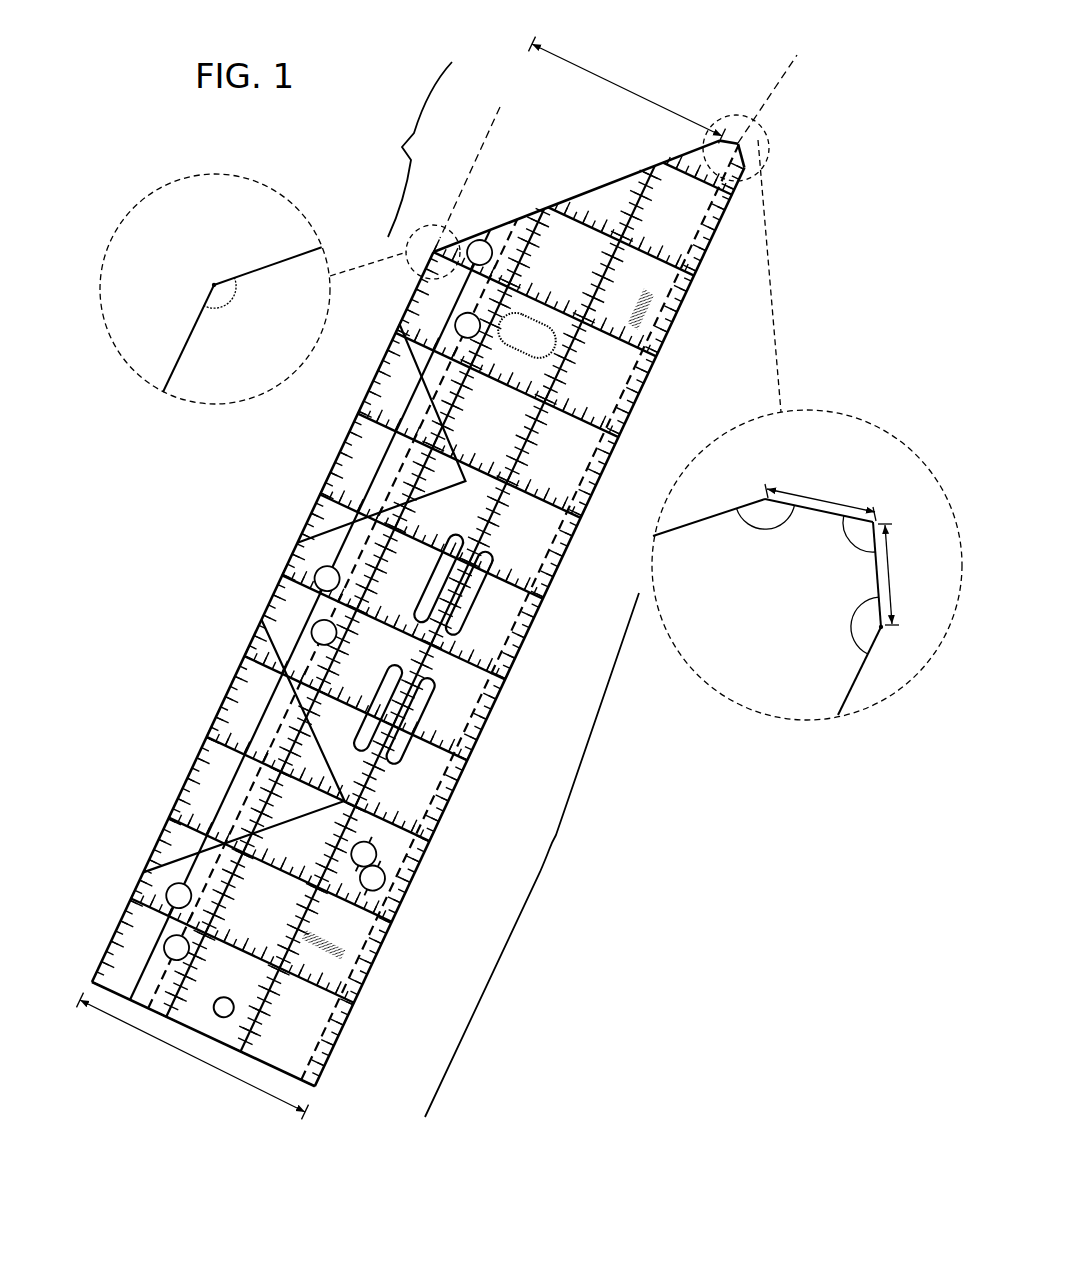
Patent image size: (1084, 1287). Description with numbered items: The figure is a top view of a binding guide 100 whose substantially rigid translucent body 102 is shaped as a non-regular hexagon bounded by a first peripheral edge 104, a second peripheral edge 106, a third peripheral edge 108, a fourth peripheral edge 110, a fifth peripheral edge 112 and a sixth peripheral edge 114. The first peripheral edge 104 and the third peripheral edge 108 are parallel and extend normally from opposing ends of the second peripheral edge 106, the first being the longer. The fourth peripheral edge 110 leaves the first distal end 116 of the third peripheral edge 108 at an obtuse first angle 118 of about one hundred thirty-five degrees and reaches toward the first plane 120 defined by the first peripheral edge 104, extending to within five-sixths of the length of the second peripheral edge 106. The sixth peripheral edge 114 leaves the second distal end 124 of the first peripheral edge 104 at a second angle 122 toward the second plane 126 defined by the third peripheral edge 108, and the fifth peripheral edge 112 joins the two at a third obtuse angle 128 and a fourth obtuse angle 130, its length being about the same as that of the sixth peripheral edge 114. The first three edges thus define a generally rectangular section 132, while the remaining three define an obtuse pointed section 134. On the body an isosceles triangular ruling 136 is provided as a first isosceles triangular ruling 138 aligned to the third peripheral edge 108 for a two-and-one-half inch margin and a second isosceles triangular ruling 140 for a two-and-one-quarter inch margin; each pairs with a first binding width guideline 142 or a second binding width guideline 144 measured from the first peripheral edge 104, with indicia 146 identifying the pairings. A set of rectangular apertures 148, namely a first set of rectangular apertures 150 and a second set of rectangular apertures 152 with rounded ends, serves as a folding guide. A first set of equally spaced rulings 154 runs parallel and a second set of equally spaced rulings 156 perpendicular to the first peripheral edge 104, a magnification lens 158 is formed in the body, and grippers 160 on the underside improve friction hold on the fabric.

The binding guide 100 is at (803, 127).
The translucent body 102 is at (691, 292).
The first peripheral edge 104 is at (353, 1012).
The second peripheral edge 106 is at (217, 1043).
The third peripheral edge 108 is at (134, 887).
The fourth peripheral edge 110 is at (685, 520).
The fifth peripheral edge 112 is at (733, 148).
The sixth peripheral edge 114 is at (746, 156).
The first distal end 116 is at (212, 283).
The first angle 118 is at (226, 306).
The first plane 120 is at (780, 87).
The second angle 122 is at (853, 618).
The second distal end 124 is at (882, 628).
The second plane 126 is at (479, 163).
The third obtuse angle 128 is at (856, 540).
The fourth obtuse angle 130 is at (756, 522).
The rectangular section 132 is at (532, 855).
The obtuse pointed section 134 is at (410, 149).
The isosceles triangular ruling 136 is at (312, 532).
The first isosceles triangular ruling 138 is at (271, 778).
The second isosceles triangular ruling 140 is at (406, 460).
The first binding width guideline 142 is at (300, 604).
The second binding width guideline 144 is at (280, 713).
The indicia 146 is at (312, 576).
The set of rectangular apertures 148 is at (476, 603).
The first set of rectangular apertures 150 is at (395, 714).
The second set of rectangular apertures 152 is at (454, 585).
The first set of equally spaced rulings 154 is at (627, 195).
The second set of equally spaced rulings 156 is at (580, 217).
The magnification lens 158 is at (553, 350).
The grippers 160 is at (648, 316).